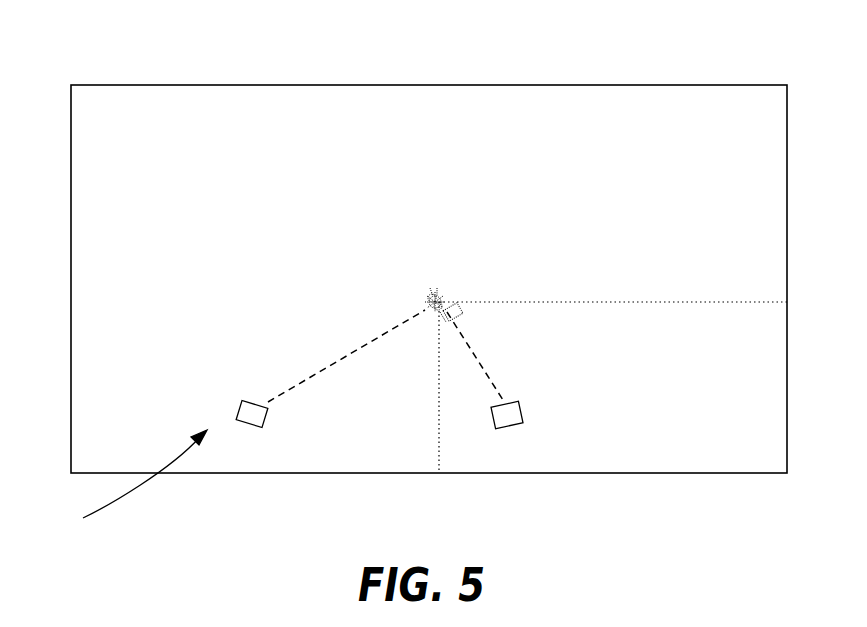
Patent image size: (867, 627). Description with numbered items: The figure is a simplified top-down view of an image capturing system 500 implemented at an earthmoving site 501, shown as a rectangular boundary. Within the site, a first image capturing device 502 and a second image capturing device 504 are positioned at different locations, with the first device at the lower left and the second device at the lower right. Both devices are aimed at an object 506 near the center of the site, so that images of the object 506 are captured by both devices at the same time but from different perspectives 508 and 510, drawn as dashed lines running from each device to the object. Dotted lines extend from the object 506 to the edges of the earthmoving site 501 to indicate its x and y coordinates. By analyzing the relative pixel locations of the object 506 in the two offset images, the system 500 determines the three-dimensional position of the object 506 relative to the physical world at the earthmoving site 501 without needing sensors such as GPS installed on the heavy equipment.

The image capturing system 500 is at (122, 484).
The earthmoving site 501 is at (187, 85).
The first image capturing device 502 is at (237, 405).
The second image capturing device 504 is at (522, 412).
The object 506 is at (435, 298).
The perspective 508 is at (352, 352).
The perspective 510 is at (475, 360).